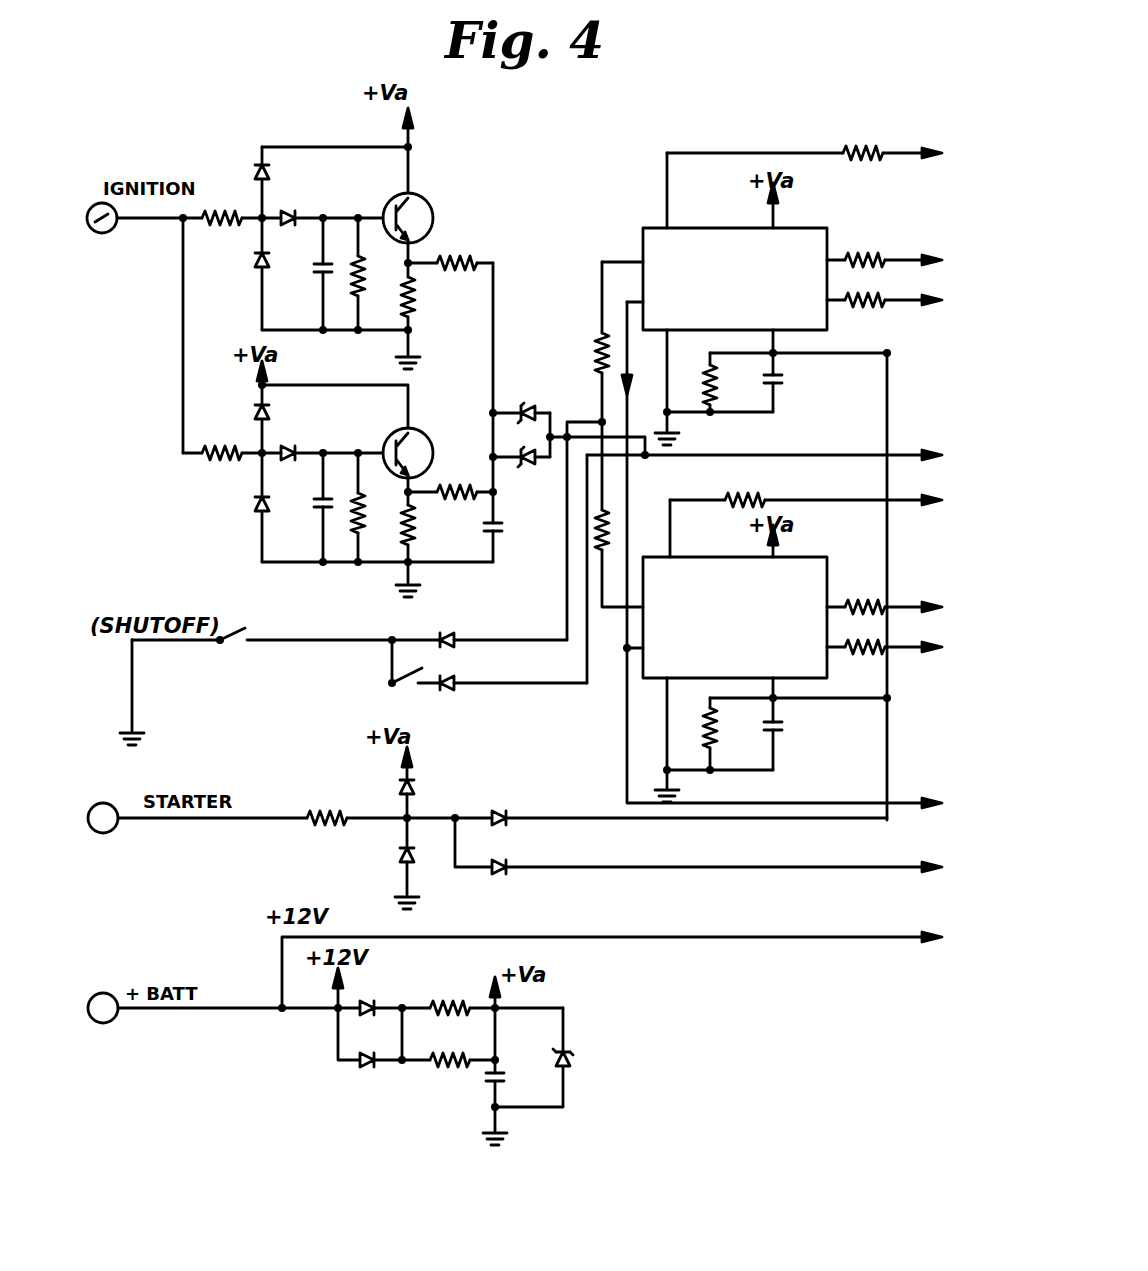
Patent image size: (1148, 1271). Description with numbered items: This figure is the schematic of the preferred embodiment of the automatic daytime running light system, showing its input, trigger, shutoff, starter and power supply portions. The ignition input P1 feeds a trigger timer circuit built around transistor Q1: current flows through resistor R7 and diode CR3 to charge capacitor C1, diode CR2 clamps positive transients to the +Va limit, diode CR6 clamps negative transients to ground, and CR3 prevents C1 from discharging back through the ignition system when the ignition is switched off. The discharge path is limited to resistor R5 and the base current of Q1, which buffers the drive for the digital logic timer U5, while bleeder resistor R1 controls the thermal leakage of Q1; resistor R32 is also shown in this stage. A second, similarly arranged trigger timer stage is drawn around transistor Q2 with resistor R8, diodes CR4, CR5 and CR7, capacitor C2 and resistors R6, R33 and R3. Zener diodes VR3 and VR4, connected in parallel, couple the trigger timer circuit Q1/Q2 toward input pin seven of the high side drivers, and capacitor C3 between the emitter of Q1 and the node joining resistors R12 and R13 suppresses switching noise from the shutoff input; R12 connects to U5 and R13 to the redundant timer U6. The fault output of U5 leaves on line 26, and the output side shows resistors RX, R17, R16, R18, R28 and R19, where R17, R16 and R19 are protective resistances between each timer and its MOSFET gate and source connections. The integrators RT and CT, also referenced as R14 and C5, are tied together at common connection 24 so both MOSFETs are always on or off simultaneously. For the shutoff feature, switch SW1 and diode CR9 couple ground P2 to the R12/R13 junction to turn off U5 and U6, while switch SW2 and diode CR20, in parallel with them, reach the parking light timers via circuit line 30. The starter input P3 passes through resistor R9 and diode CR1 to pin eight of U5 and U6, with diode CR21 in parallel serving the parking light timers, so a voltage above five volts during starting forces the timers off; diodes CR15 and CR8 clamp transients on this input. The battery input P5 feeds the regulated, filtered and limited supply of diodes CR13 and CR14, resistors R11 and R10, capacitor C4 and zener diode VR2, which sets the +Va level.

The ignition input P1 is at (144, 235).
The resistor R7 is at (240, 228).
The diode CR2 is at (258, 165).
The diode CR3 is at (290, 208).
The diode CR6 is at (258, 285).
The timing capacitor C1 is at (316, 284).
The resistor R5 is at (377, 274).
The trigger timer transistor Q1 is at (427, 189).
The resistor R32 is at (500, 250).
The bleeder resistor R1 is at (420, 310).
The resistor R8 is at (206, 466).
The diode CR4 is at (255, 408).
The diode CR5 is at (292, 439).
The diode CR7 is at (255, 509).
The capacitor C2 is at (318, 516).
The resistor R6 is at (376, 507).
The trigger timer transistor Q2 is at (417, 432).
The resistor R33 is at (450, 481).
The resistor R3 is at (418, 541).
The capacitor C3 is at (502, 538).
The zener diode VR3 is at (548, 390).
The zener diode VR4 is at (543, 480).
The circuit line 30 is at (840, 452).
The resistor R12 is at (598, 346).
The resistor R13 is at (606, 512).
The fault signal line 26 is at (622, 328).
The digital logic timer U5 is at (716, 227).
The resistor RX is at (858, 147).
The protective resistance R17 is at (912, 210).
The protective resistance R16 is at (880, 305).
The integrator resistor RT is at (706, 385).
The integrator capacitor CT is at (785, 386).
The redundant digital logic timer U6 is at (716, 567).
The resistor R18 is at (772, 478).
The resistor R28 is at (866, 600).
The protective resistance R19 is at (870, 650).
The common connection 24 is at (888, 698).
The integrator resistor R14 is at (728, 708).
The integrator capacitor C5 is at (790, 734).
The shutoff input P2 is at (120, 692).
The manual switch SW1 is at (245, 648).
The manual switch SW2 is at (390, 697).
The diode CR9 is at (460, 636).
The diode CR20 is at (456, 692).
The starter input P3 is at (197, 835).
The resistor R9 is at (310, 828).
The diode CR15 is at (392, 783).
The diode CR8 is at (395, 860).
The diode CR1 is at (535, 780).
The diode CR21 is at (515, 867).
The battery input terminal P5 is at (213, 1027).
The diode CR13 is at (352, 1007).
The diode CR14 is at (370, 1070).
The resistor R11 is at (443, 995).
The resistor R10 is at (460, 1070).
The capacitor C4 is at (490, 1085).
The zener diode VR2 is at (573, 1070).